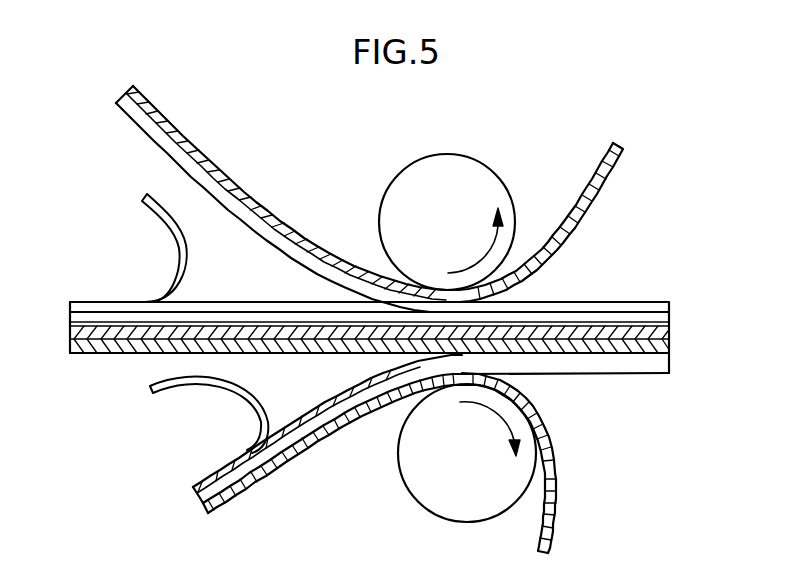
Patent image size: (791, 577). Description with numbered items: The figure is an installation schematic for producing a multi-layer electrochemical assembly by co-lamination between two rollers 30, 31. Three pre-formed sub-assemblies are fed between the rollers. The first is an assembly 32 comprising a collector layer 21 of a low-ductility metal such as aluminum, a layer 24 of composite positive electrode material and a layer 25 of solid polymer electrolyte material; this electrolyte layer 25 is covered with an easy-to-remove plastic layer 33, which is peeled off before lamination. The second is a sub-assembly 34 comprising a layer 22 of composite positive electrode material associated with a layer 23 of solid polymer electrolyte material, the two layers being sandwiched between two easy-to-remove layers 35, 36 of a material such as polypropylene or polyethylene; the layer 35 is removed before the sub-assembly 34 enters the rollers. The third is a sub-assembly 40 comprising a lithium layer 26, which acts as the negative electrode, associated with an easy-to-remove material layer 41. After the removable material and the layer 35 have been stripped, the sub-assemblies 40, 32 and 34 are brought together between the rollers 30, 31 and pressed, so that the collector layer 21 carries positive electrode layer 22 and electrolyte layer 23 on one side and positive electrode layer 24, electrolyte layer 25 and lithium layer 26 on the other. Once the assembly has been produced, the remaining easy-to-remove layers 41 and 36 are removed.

The layer of a metal with low ductility 21 is at (103, 354).
The layer of composite positive electrode material 22 is at (296, 426).
The layer of solid polymer electrolyte material 23 is at (303, 444).
The layer of composite positive electrode material 24 is at (193, 311).
The layer of solid polymer electrolyte material 25 is at (266, 323).
The layer of lithium 26 is at (163, 120).
The roller 30 is at (481, 166).
The roller 31 is at (428, 498).
The assembly 32 is at (68, 320).
The layer of plastic material 33 is at (140, 204).
The sub-assembly 34 is at (203, 516).
The layer of easy-to-remove material 35 is at (239, 392).
The layer of easy-to-remove material 36 is at (253, 500).
The sub-assembly 40 is at (138, 86).
The layer of easy-to-remove material 41 is at (231, 182).